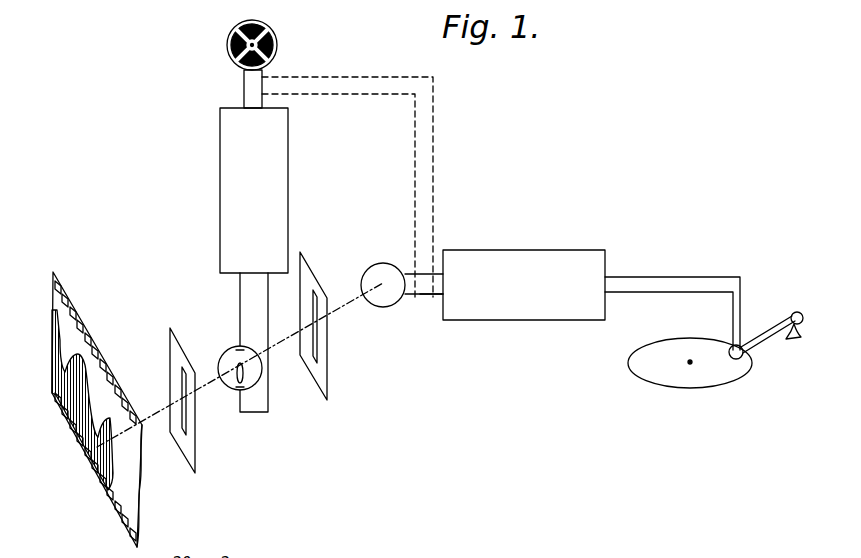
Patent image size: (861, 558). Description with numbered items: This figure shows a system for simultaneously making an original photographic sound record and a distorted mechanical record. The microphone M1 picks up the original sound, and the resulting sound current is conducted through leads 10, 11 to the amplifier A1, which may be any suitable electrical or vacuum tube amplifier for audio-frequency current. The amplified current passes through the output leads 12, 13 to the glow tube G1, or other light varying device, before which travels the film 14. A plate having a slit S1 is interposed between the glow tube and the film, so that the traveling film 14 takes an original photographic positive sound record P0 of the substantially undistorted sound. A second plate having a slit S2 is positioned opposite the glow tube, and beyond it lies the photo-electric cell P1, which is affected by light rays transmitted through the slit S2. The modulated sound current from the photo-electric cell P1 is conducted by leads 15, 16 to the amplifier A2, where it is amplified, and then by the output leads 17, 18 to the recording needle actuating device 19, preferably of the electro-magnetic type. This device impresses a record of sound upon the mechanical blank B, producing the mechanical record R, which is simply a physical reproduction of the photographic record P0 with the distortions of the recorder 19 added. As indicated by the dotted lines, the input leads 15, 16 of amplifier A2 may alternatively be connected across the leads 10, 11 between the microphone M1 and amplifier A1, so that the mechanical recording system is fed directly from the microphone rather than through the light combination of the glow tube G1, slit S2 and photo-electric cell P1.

The microphone M1 is at (232, 48).
The lead 10 is at (244, 93).
The lead 11 is at (265, 88).
The amplifier A1 is at (235, 171).
The output lead 12 is at (240, 297).
The output lead 13 is at (268, 290).
The glow tube G1 is at (231, 362).
The film 14 is at (83, 305).
The slit S1 is at (184, 422).
The slit S2 is at (322, 352).
The photographic positive sound record P0 is at (97, 447).
The photo-electric cell P1 is at (386, 276).
The lead 15 is at (420, 272).
The lead 16 is at (426, 298).
The amplifier A2 is at (553, 266).
The output lead 17 is at (625, 277).
The output lead 18 is at (633, 293).
The recording needle actuating device 19 is at (743, 355).
The mechanical blank B is at (670, 378).
The distorted mechanical record R is at (89, 554).